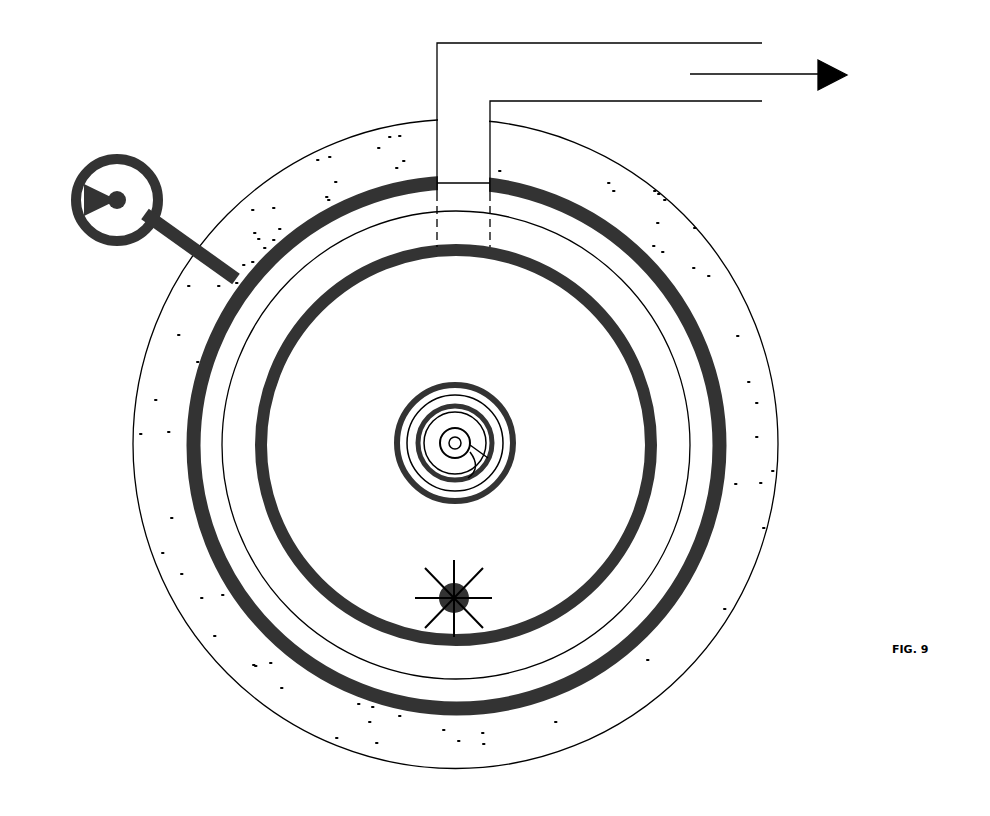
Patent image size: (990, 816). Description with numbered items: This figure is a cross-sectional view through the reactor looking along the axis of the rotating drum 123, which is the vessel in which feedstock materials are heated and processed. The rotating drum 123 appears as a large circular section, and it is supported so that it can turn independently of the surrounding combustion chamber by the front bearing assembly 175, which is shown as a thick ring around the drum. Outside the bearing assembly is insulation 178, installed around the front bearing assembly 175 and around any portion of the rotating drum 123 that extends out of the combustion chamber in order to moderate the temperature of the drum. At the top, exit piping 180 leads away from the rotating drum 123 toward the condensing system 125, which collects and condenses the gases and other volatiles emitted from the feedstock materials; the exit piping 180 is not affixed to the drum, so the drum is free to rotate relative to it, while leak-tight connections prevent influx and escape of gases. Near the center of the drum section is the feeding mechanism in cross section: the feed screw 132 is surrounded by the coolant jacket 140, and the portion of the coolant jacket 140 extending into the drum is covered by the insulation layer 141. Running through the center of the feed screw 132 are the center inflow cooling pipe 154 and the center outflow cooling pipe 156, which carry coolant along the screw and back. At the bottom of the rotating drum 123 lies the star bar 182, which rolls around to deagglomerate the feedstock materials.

The rotating drum 123 is at (630, 345).
The condensing system 125 is at (690, 74).
The feed screw 132 is at (483, 435).
The coolant jacket 140 is at (498, 438).
The insulation layer 141 is at (508, 442).
The center inflow cooling pipe 154 is at (457, 443).
The center outflow cooling pipe 156 is at (467, 440).
The front bearing assembly 175 is at (657, 307).
The insulation 178 is at (700, 283).
The exit piping 180 is at (650, 102).
The star bar 182 is at (492, 597).